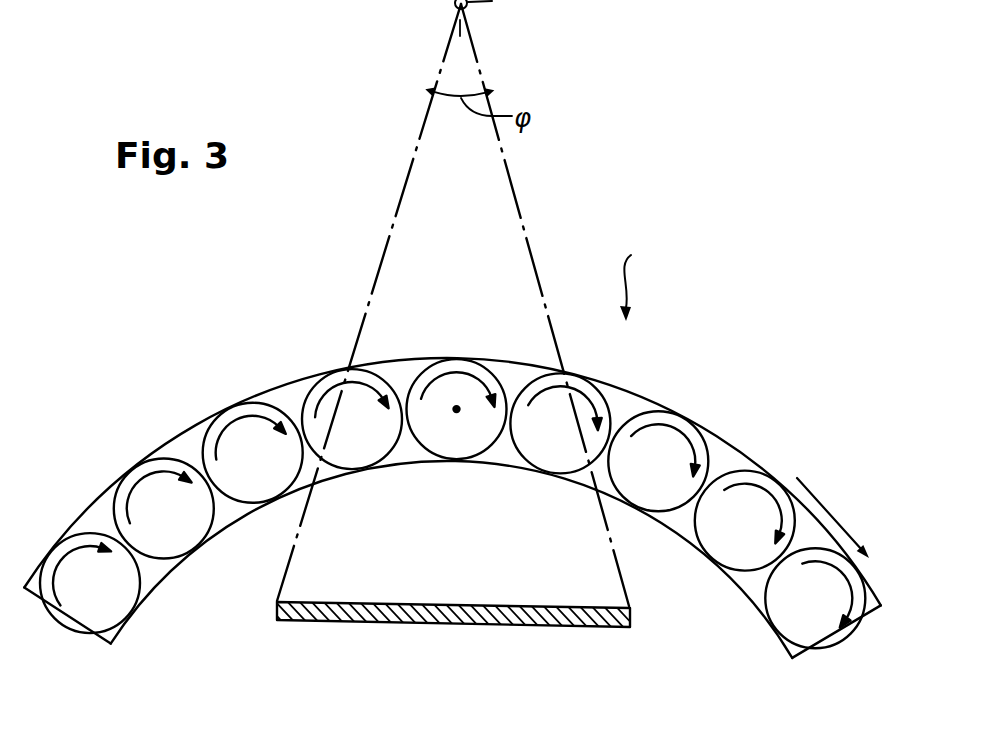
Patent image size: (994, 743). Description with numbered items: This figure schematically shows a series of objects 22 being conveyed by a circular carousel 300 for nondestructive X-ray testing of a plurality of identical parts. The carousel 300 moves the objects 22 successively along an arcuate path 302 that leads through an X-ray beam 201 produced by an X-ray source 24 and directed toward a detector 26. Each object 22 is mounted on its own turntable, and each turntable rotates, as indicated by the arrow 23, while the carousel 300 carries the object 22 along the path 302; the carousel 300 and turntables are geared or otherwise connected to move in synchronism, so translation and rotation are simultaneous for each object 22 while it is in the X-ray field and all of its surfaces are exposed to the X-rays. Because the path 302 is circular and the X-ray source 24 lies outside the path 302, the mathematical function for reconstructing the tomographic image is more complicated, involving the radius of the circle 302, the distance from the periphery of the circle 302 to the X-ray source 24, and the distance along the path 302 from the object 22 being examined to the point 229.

The object 22 is at (138, 458).
The arrow 23 is at (68, 553).
The X-ray source 24 is at (455, 7).
The detector 26 is at (567, 604).
The X-ray beam 201 is at (520, 162).
The point 229 is at (456, 409).
The circular carousel 300 is at (648, 282).
The arcuate path 302 is at (822, 498).